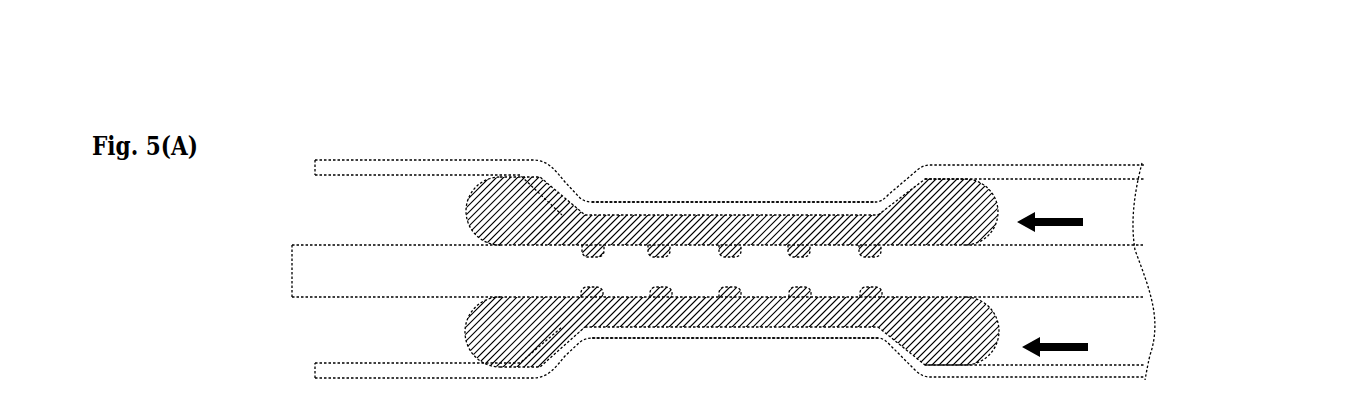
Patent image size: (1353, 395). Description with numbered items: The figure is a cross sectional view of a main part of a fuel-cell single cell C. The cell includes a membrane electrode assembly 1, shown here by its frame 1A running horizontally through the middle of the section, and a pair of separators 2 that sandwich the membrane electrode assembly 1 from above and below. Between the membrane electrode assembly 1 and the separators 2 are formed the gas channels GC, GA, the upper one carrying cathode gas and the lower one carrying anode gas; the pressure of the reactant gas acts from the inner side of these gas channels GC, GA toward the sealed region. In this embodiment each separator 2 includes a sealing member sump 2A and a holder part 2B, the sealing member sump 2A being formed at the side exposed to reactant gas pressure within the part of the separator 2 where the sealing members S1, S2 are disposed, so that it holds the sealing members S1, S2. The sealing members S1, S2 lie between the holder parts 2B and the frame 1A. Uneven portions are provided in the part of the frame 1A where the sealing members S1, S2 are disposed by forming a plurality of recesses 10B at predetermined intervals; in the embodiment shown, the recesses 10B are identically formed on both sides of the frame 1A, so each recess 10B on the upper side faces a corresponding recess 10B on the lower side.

The separator 2 is at (313, 153).
The sealing member sump 2A is at (546, 172).
The holder part 2B is at (706, 201).
The recess 10B is at (672, 297).
The sealing member S1 is at (730, 221).
The sealing member S2 is at (853, 312).
The frame 1A is at (809, 268).
The membrane electrode assembly 1 is at (1124, 280).
The fuel-cell single cell C is at (1147, 157).
The gas channel for cathode gas GC is at (1120, 214).
The gas channel for anode gas GA is at (1142, 330).